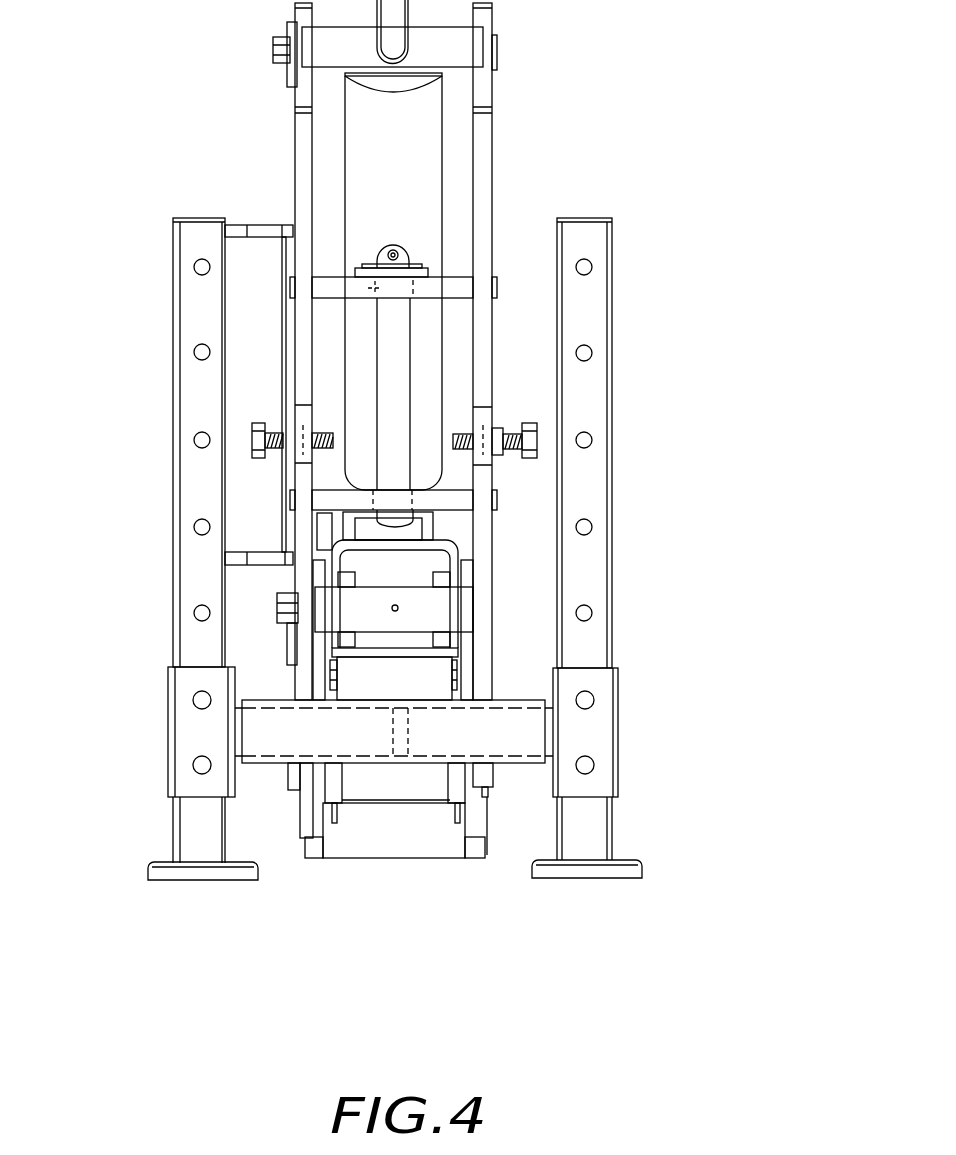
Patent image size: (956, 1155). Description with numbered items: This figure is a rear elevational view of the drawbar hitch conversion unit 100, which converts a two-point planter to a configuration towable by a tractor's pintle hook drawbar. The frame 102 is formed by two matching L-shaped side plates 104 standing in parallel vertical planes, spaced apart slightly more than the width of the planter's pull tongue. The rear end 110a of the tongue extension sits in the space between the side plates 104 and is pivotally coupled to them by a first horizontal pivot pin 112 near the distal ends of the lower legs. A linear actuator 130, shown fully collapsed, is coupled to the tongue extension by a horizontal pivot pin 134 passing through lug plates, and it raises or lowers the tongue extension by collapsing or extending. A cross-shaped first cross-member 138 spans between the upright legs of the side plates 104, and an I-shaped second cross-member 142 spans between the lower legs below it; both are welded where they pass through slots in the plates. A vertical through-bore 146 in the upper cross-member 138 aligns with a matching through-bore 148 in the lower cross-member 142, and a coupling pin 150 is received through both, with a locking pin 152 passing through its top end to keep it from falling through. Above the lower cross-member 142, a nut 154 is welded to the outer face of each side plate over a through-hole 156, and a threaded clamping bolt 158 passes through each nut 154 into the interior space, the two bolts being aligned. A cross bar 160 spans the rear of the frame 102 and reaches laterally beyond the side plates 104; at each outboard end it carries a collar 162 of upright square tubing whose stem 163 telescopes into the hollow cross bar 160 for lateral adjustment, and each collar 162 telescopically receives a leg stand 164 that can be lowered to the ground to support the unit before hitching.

The drawbar hitch conversion unit 100 is at (712, 113).
The frame 102 is at (503, 86).
The side plates 104 is at (290, 157).
The rear end of the tongue extension 110a is at (455, 570).
The first horizontal pivot pin 112 is at (438, 605).
The linear actuator 130 is at (432, 325).
The horizontal pivot pin 134 is at (400, 535).
The first plate-shaped cross-member 138 is at (453, 284).
The second plate-shaped cross-member 142 is at (457, 505).
The vertical through-bore 146 is at (375, 288).
The vertical through-bore 148 is at (385, 493).
The coupling pin 150 is at (385, 365).
The locking pin 152 is at (391, 256).
The nut 154 is at (293, 430).
The through-hole 156 is at (485, 450).
The clamping bolt 158 is at (251, 445).
The cross bar 160 is at (404, 752).
The collar 162 is at (197, 727).
The stem 163 is at (272, 738).
The leg stand 164 is at (197, 572).